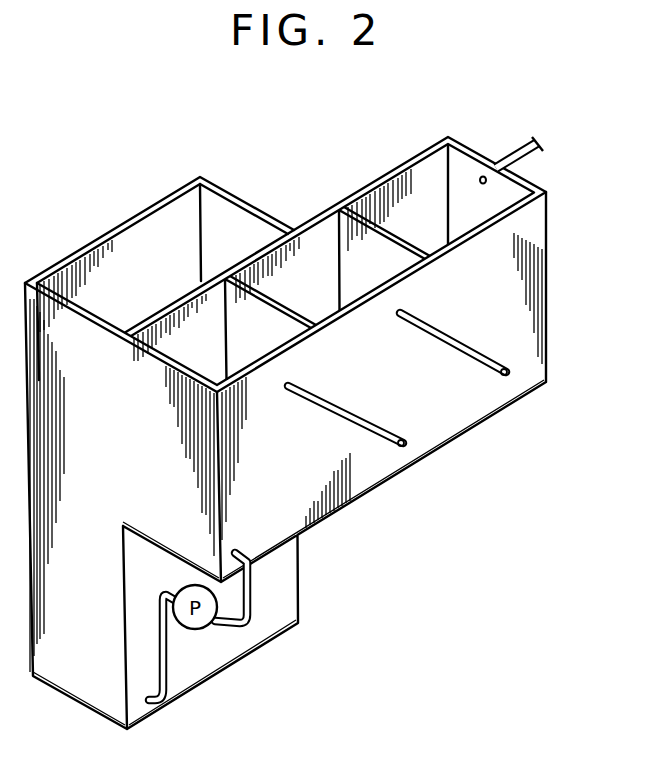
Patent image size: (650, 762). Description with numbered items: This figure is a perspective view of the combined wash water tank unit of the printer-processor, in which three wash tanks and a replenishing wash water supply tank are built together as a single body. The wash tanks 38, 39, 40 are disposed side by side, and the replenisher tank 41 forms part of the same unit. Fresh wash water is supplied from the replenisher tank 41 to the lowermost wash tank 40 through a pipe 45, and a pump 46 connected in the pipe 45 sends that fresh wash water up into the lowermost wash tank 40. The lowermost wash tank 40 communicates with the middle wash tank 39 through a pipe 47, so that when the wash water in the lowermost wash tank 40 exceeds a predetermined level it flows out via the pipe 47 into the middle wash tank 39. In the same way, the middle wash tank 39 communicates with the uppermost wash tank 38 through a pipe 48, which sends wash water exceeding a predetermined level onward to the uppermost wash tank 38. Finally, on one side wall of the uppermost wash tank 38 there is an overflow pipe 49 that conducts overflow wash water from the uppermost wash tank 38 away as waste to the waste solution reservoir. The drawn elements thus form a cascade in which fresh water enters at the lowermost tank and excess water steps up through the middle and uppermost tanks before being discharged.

The uppermost wash tank 38 is at (430, 170).
The middle wash tank 39 is at (318, 243).
The lowermost wash tank 40 is at (191, 332).
The replenisher tank 41 is at (138, 240).
The pipe 45 is at (247, 600).
The pump 46 is at (198, 629).
The pipe 47 is at (340, 440).
The pipe 48 is at (483, 356).
The overflow pipe 49 is at (524, 146).